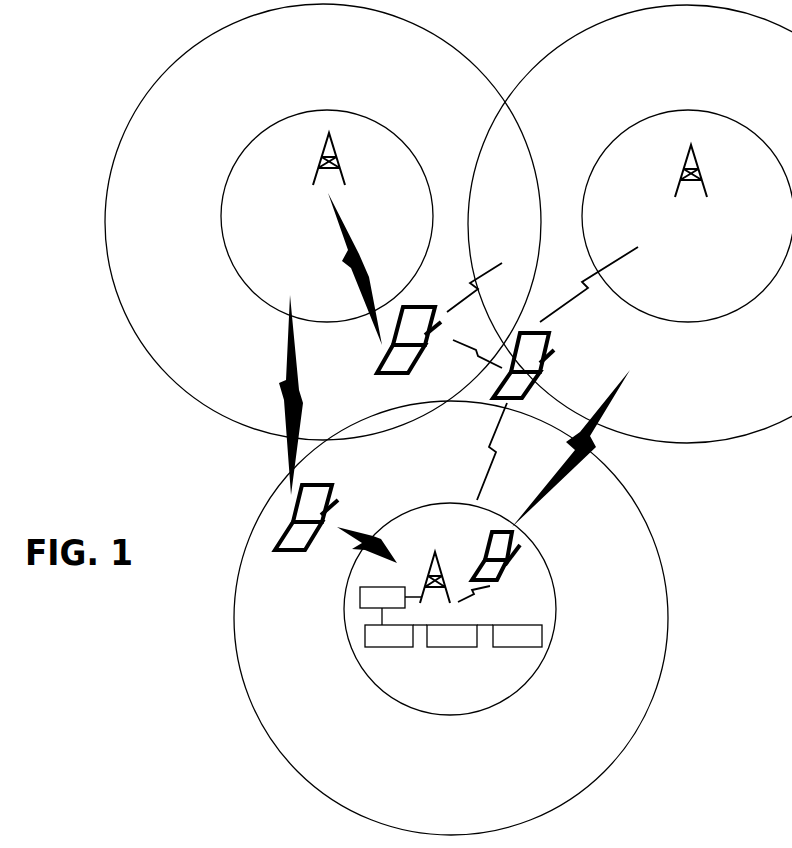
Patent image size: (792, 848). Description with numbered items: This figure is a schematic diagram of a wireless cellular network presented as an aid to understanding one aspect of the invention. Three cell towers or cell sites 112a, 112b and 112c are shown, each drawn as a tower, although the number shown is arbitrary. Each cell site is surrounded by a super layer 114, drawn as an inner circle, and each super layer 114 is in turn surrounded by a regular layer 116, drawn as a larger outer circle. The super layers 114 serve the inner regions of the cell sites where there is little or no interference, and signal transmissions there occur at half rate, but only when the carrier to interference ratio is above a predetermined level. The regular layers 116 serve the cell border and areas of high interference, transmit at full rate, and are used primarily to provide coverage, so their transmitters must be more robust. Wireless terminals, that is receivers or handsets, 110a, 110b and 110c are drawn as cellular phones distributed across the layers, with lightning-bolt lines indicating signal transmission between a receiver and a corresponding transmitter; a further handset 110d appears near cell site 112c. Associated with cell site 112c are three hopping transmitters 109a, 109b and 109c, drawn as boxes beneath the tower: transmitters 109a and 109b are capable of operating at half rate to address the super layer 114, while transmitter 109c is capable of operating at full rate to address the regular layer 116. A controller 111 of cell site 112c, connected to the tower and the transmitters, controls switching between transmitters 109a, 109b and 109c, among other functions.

The regular layer 116 is at (448, 419).
The super layer 114 is at (498, 412).
The cell site 112a is at (310, 159).
The cell site 112b is at (707, 171).
The cell site 112c is at (433, 569).
The controller 111 is at (340, 607).
The transmitter 109a is at (389, 636).
The transmitter 109b is at (445, 636).
The transmitter 109c is at (512, 661).
The wireless terminal 110a is at (423, 341).
The wireless terminal 110b is at (542, 365).
The wireless terminal 110c is at (331, 517).
The mobile station 110d is at (504, 568).